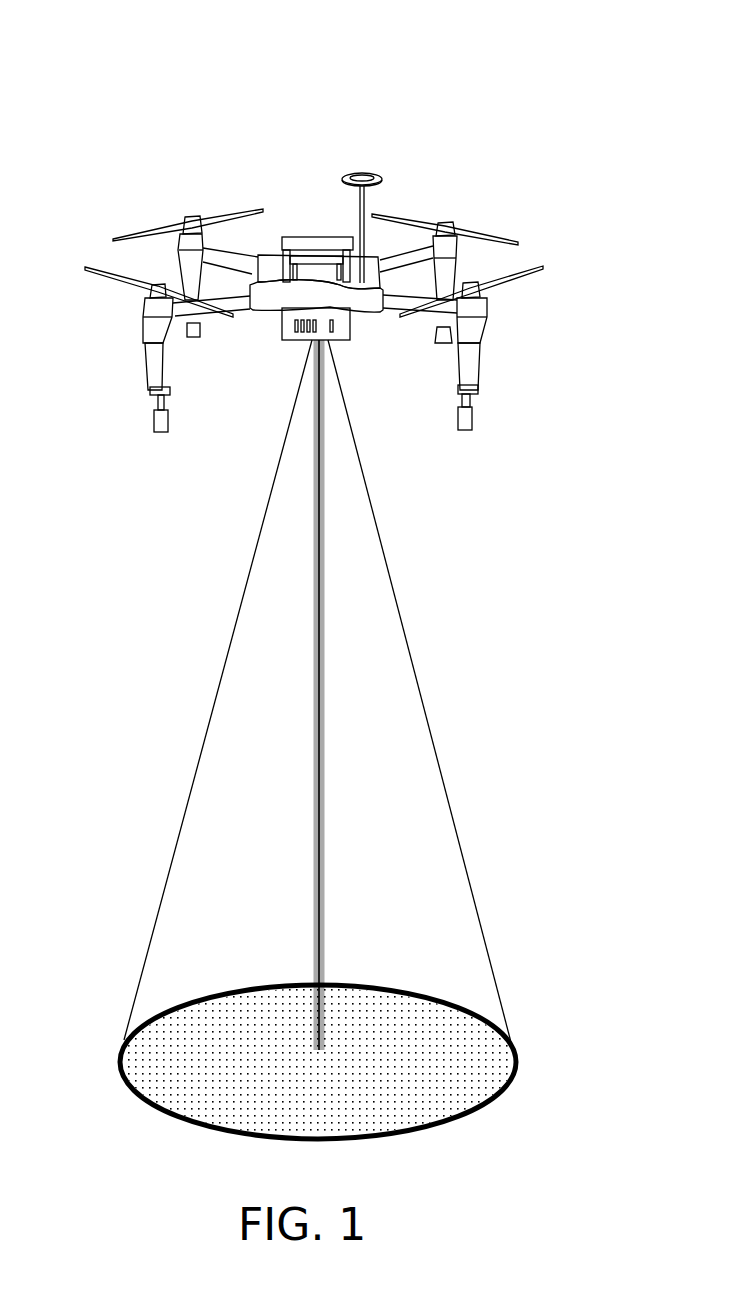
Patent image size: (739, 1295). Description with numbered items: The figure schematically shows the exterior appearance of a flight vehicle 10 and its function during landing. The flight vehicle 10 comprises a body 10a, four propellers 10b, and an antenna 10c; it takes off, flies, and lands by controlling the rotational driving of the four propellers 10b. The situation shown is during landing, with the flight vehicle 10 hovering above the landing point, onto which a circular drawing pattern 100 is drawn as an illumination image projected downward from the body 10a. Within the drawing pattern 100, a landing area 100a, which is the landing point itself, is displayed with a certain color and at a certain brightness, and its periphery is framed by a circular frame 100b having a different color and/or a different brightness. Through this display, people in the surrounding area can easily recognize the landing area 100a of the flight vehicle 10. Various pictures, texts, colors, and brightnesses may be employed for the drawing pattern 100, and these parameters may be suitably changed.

The flight vehicle 10 is at (196, 122).
The body 10a is at (290, 236).
The propellers 10b is at (150, 227).
The antenna 10c is at (362, 172).
The drawing pattern 100 is at (176, 986).
The landing area 100a is at (378, 1040).
The circular frame 100b is at (253, 986).